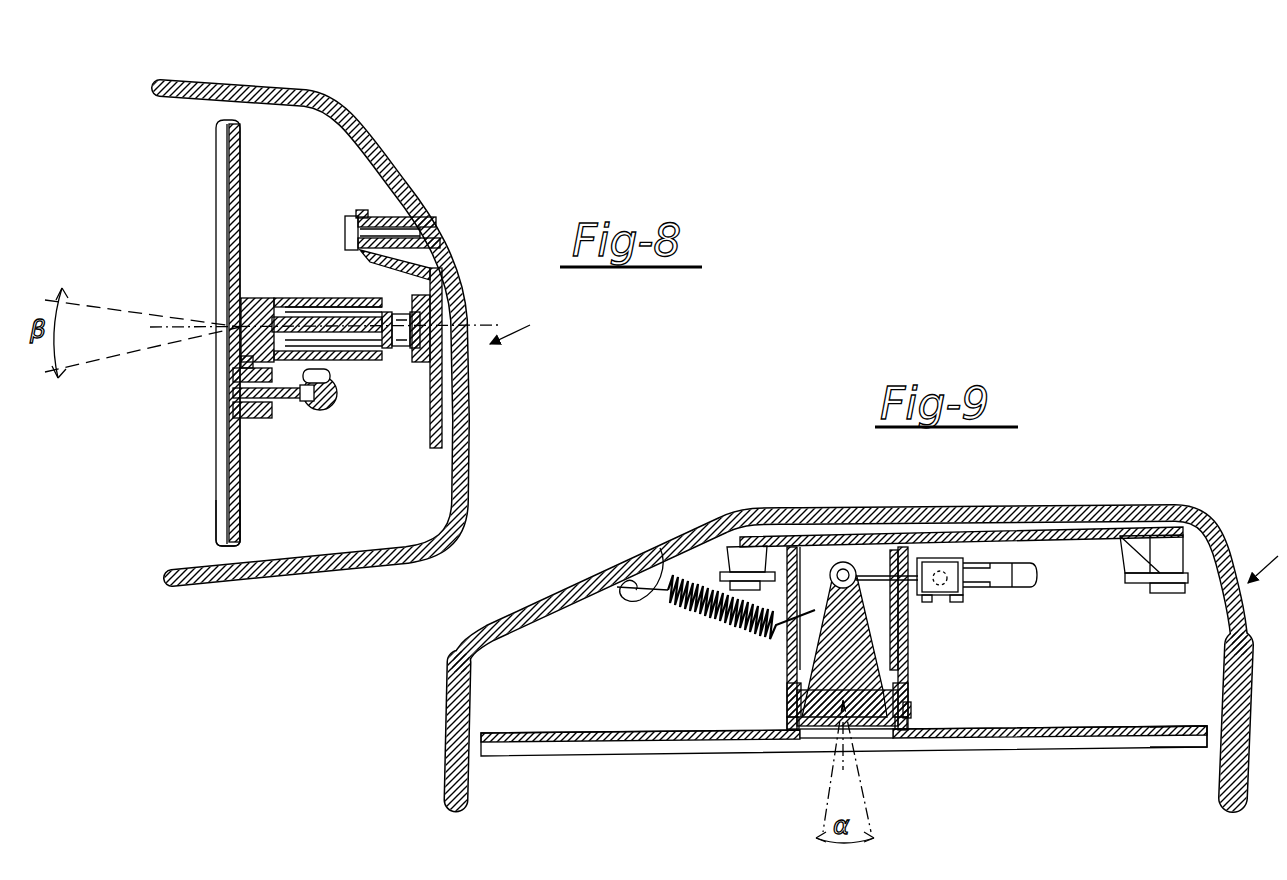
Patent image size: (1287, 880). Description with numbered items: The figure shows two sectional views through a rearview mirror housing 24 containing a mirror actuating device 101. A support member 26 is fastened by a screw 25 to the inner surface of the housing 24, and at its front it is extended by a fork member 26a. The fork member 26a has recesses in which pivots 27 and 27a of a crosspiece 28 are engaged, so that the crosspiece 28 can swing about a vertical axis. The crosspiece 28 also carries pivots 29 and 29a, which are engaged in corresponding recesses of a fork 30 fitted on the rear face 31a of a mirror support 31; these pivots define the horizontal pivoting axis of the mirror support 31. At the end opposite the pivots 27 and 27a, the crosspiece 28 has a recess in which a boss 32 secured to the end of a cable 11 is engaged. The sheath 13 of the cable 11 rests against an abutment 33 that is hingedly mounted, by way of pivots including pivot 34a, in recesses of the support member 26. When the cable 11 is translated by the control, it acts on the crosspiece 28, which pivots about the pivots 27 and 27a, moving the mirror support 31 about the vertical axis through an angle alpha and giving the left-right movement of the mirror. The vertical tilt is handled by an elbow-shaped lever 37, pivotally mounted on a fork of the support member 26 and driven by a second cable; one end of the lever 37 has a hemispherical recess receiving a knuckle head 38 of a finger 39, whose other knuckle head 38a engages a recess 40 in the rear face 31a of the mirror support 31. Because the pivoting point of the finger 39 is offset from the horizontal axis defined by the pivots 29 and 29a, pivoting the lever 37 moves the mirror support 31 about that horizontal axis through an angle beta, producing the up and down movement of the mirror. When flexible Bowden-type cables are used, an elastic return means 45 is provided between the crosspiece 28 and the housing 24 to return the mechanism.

In FIG. 9, the cable 11 is at (878, 566).
In FIG. 9, the sheath 13 is at (1028, 582).
In FIG. 8, the rearview mirror housing 24 is at (385, 144).
In FIG. 9, the rearview mirror housing 24 is at (1040, 510).
In FIG. 8, the screw 25 is at (432, 231).
In FIG. 8, the support member 26 is at (442, 392).
In FIG. 9, the support member 26 is at (1078, 532).
In FIG. 8, the fork member 26a is at (330, 348).
In FIG. 9, the fork member 26a is at (883, 640).
In FIG. 8, the pivot 27 is at (265, 296).
In FIG. 8, the pivot 27a is at (240, 360).
In FIG. 9, the pivot 27a is at (815, 745).
In FIG. 8, the crosspiece 28 is at (311, 296).
In FIG. 9, the crosspiece 28 is at (787, 656).
In FIG. 9, the pivot 29 is at (797, 712).
In FIG. 9, the pivot 29a is at (911, 706).
In FIG. 9, the fork 30 is at (787, 692).
In FIG. 8, the mirror support 31 is at (230, 446).
In FIG. 9, the mirror support 31 is at (632, 742).
In FIG. 8, the rear face 31a is at (243, 506).
In FIG. 9, the rear face 31a is at (1073, 730).
In FIG. 8, the boss 32 is at (420, 324).
In FIG. 9, the boss 32 is at (837, 563).
In FIG. 9, the abutment 33 is at (958, 562).
In FIG. 9, the pivot 34a is at (940, 560).
In FIG. 8, the elbow-shaped lever 37 is at (338, 393).
In FIG. 8, the knuckle head 38 is at (321, 410).
In FIG. 8, the knuckle head 38a is at (250, 384).
In FIG. 8, the finger 39 is at (290, 400).
In FIG. 8, the recess 40 is at (250, 418).
In FIG. 9, the elastic return means 45 is at (682, 620).
In FIG. 8, the mirror actuating device 101 is at (531, 321).
In FIG. 9, the mirror actuating device 101 is at (1267, 559).